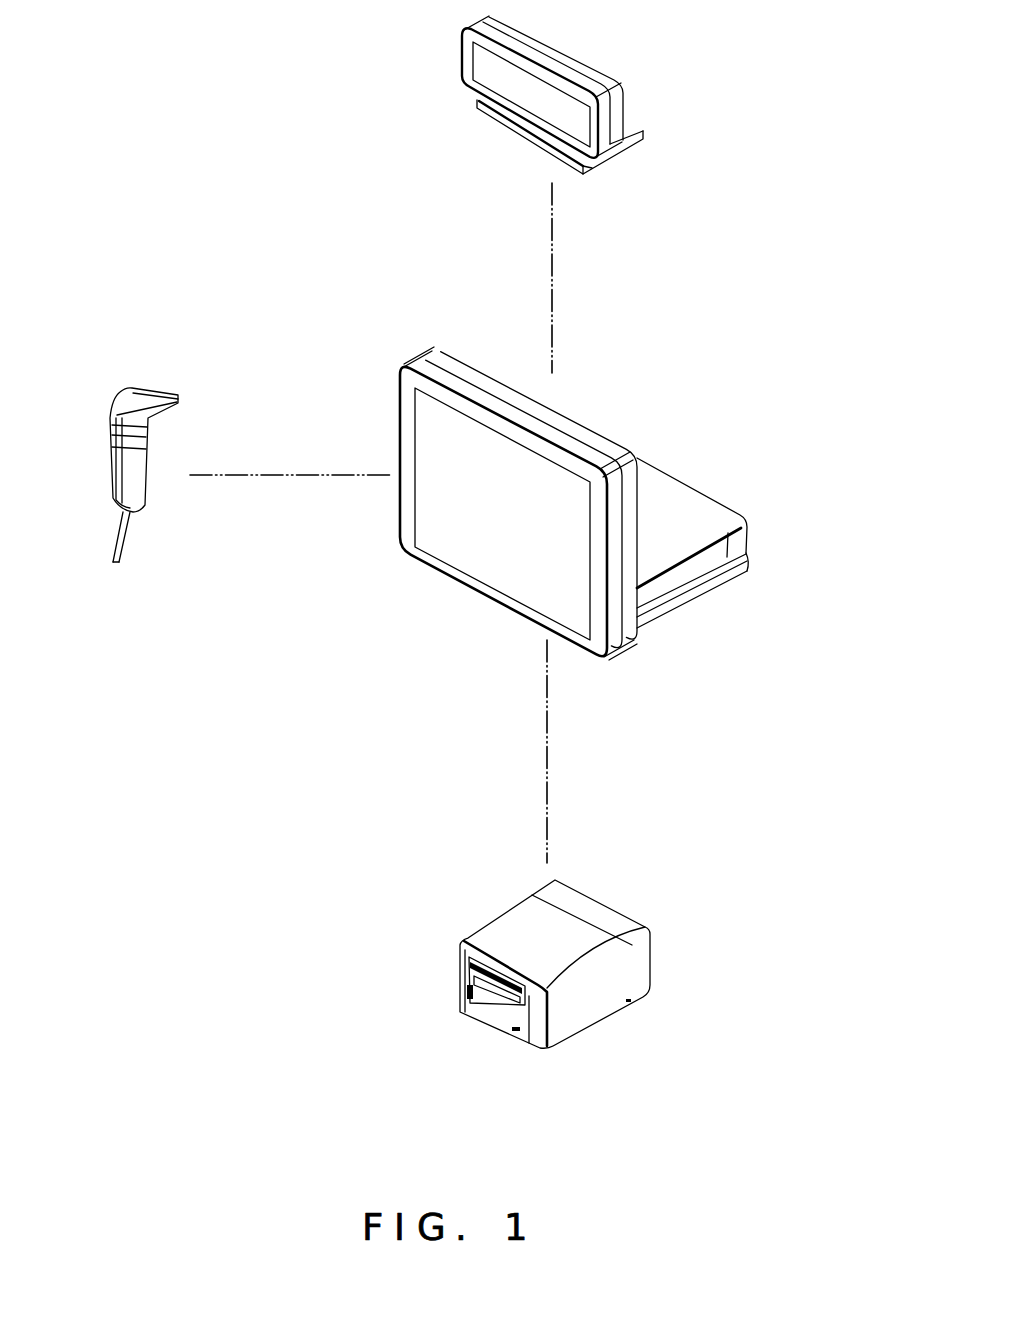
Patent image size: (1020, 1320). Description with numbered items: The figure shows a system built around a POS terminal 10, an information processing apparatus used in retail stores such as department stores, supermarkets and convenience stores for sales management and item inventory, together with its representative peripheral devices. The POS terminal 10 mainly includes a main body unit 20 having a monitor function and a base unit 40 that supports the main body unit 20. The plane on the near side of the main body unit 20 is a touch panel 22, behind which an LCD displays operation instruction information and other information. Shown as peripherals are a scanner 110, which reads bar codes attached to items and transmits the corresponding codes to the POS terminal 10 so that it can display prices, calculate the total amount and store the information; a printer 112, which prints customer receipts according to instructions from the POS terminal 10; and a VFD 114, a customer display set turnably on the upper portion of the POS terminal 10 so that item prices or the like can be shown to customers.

The POS terminal 10 is at (723, 446).
The main body unit 20 is at (593, 647).
The touch panel 22 is at (448, 545).
The base unit 40 is at (668, 588).
The scanner 110 is at (148, 413).
The printer 112 is at (640, 960).
The VFD (Vacuum Fluorescent Display) 114 is at (623, 90).